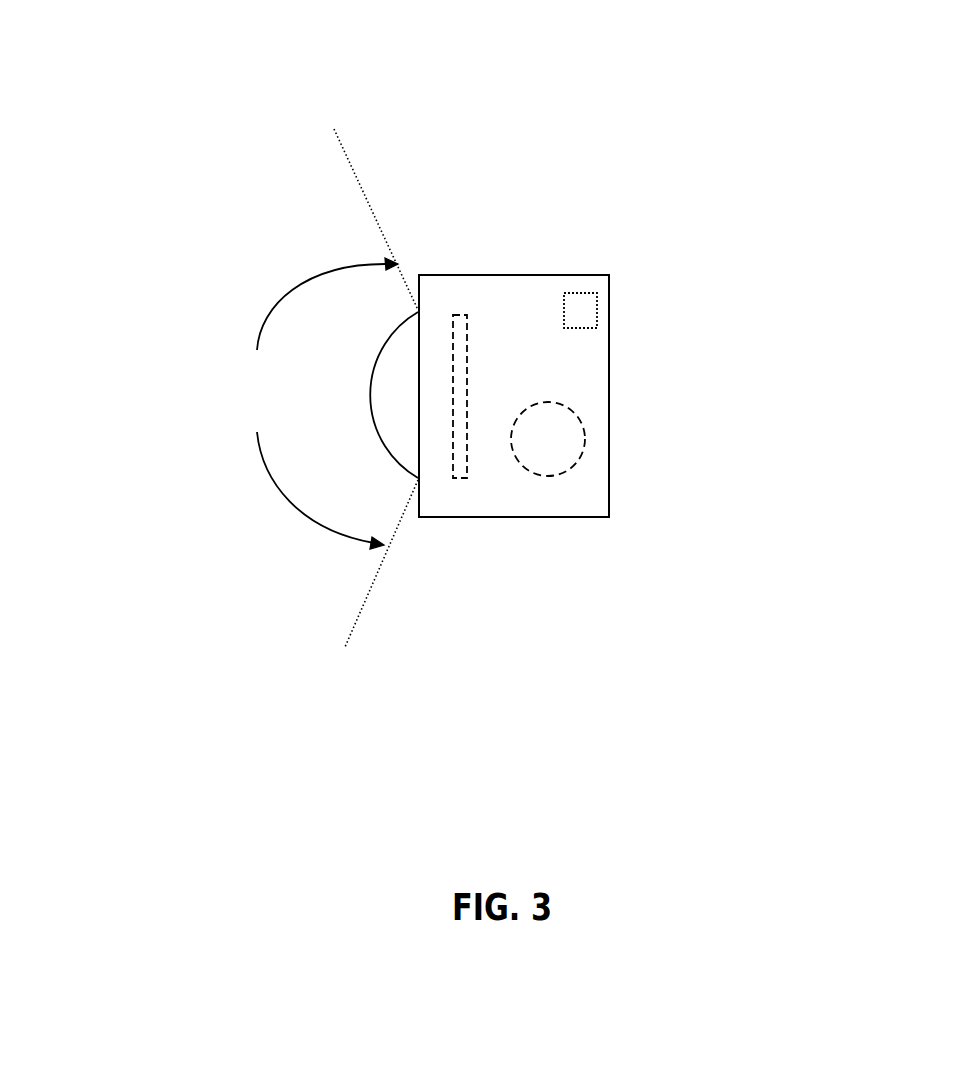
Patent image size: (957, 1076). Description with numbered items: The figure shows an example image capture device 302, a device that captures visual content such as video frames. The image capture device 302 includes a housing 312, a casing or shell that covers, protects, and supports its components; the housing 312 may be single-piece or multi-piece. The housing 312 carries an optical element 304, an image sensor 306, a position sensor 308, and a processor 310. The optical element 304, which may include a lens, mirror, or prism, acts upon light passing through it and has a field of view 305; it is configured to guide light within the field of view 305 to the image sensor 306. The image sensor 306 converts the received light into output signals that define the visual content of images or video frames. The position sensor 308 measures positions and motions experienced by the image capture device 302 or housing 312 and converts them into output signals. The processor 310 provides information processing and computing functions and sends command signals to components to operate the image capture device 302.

The image capture device 302 is at (573, 144).
The optical element 304 is at (417, 476).
The field of view 305 is at (291, 388).
The image sensor 306 is at (456, 315).
The position sensor 308 is at (597, 313).
The processor 310 is at (586, 438).
The housing 312 is at (525, 517).